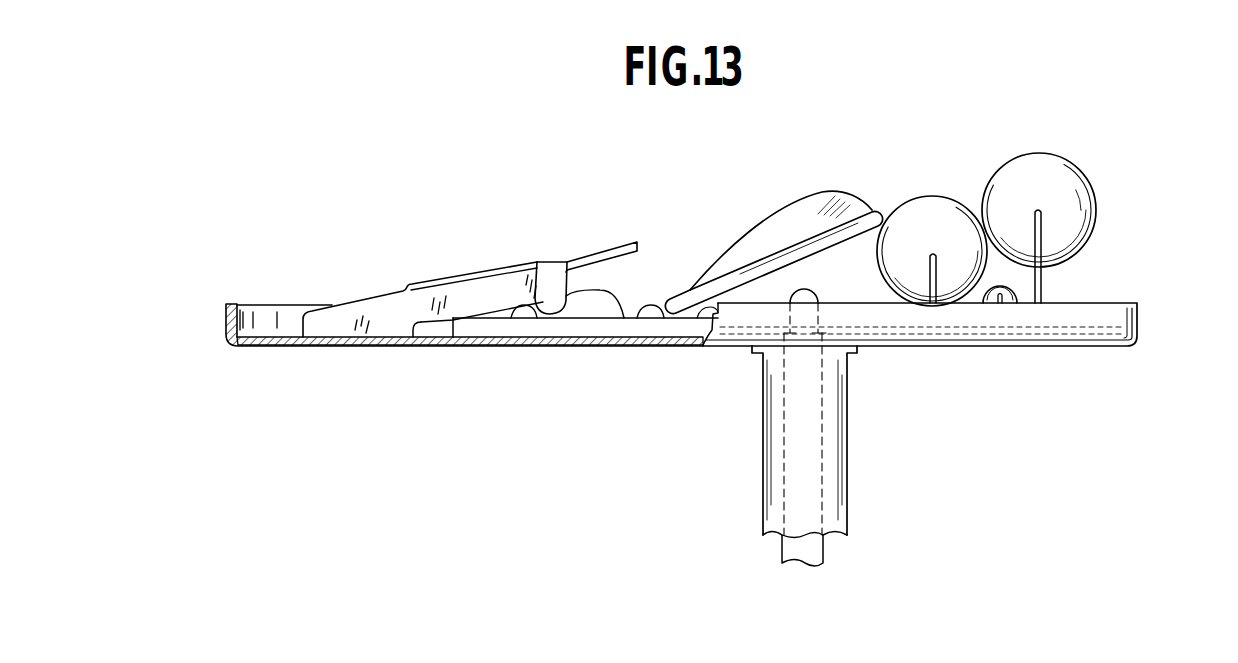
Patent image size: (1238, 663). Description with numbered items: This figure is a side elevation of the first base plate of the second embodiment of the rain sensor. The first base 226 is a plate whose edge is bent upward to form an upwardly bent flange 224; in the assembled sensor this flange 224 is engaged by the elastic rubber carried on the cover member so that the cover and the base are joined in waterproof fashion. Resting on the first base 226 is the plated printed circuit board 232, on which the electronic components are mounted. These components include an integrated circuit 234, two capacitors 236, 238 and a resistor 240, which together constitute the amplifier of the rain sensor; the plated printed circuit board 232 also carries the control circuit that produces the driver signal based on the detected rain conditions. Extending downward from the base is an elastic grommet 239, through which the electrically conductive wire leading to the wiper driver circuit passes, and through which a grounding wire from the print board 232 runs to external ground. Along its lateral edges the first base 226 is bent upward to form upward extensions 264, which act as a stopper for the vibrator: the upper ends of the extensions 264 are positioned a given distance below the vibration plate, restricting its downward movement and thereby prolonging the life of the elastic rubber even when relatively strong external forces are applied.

The upwardly bent flange 224 is at (226, 322).
The first base 226 is at (600, 345).
The plated printed circuit board 232 is at (507, 331).
The integrated circuit 234 is at (752, 245).
The capacitor 236 is at (936, 212).
The capacitor 238 is at (1073, 184).
The elastic grommet 239 is at (838, 426).
The resistor 240 is at (1017, 296).
The upward extension 264 is at (544, 272).